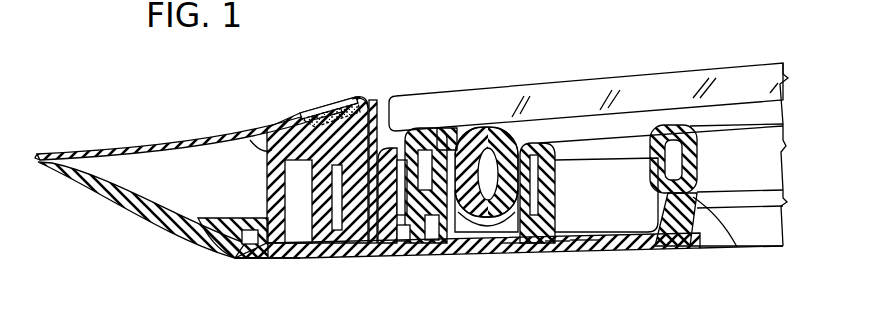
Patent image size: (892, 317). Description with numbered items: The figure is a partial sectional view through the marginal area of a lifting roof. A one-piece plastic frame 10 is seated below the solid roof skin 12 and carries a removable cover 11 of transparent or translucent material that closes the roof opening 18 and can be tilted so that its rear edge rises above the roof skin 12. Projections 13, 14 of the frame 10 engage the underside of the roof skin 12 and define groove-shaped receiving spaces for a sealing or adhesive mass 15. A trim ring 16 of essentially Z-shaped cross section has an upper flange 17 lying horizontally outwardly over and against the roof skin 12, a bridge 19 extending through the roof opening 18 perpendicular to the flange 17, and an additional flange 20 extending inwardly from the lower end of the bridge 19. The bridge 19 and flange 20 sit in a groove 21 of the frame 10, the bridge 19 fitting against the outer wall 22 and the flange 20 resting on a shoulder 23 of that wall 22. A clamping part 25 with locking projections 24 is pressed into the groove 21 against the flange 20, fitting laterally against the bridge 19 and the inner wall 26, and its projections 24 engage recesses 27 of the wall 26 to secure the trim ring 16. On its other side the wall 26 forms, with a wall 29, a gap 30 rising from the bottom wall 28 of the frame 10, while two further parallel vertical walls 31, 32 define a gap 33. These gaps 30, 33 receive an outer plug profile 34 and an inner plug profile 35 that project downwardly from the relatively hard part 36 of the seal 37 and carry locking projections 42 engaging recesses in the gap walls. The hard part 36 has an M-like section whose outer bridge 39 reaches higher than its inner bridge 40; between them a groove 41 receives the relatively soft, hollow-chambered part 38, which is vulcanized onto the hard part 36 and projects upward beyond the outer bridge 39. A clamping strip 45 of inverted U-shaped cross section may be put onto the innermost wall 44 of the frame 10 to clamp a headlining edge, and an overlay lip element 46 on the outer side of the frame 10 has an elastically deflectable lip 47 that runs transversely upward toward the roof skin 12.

The frame 10 is at (680, 253).
The removable cover 11 is at (730, 87).
The roof skin 12 is at (128, 143).
The projection 13 is at (273, 127).
The projection 14 is at (313, 113).
The sealing or adhesive mass 15 is at (250, 140).
The trim ring 16 is at (358, 90).
The upper flange 17 is at (340, 108).
The roof opening 18 is at (618, 120).
The bridge 19 is at (375, 157).
The additional flange 20 is at (368, 258).
The groove 21 is at (387, 258).
The wall 22 is at (310, 258).
The shoulder 23 is at (340, 258).
The locking projections 24 is at (410, 130).
The clamping part 25 is at (388, 140).
The wall 26 is at (420, 258).
The engaging recesses 27 is at (405, 258).
The bottom wall 28 is at (617, 252).
The wall 29 is at (457, 230).
The gap 30 is at (440, 233).
The vertical wall 31 is at (530, 255).
The vertical wall 32 is at (573, 253).
The gap 33 is at (550, 255).
The outer plug profile 34 is at (440, 130).
The inner plug profile 35 is at (555, 197).
The hard part 36 is at (533, 140).
The seal 37 is at (497, 105).
The soft part 38 is at (528, 147).
The outer bridge 39 is at (467, 130).
The inner bridge 40 is at (547, 147).
The groove 41 is at (508, 255).
The locking projections 42 is at (555, 237).
The innermost wall 44 is at (737, 247).
The clamping strip 45 is at (760, 167).
The overlay lip element 46 is at (197, 258).
The lip 47 is at (110, 190).